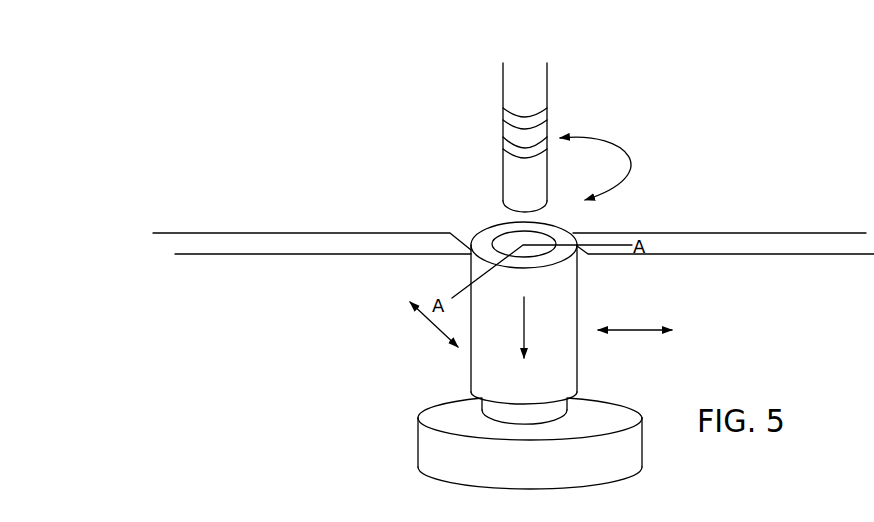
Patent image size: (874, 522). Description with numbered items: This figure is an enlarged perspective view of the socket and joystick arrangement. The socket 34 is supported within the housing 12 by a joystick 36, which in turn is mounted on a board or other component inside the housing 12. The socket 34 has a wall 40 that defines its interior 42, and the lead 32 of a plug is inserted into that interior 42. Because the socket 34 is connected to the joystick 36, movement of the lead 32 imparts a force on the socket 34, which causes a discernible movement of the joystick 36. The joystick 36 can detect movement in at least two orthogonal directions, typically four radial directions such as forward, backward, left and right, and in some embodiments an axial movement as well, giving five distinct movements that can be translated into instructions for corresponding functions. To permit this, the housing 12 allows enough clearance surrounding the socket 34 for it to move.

The housing 12 is at (247, 245).
The lead 32 is at (535, 87).
The socket 34 is at (458, 372).
The joystick 36 is at (610, 413).
The wall 40 is at (567, 298).
The interior 42 is at (503, 247).